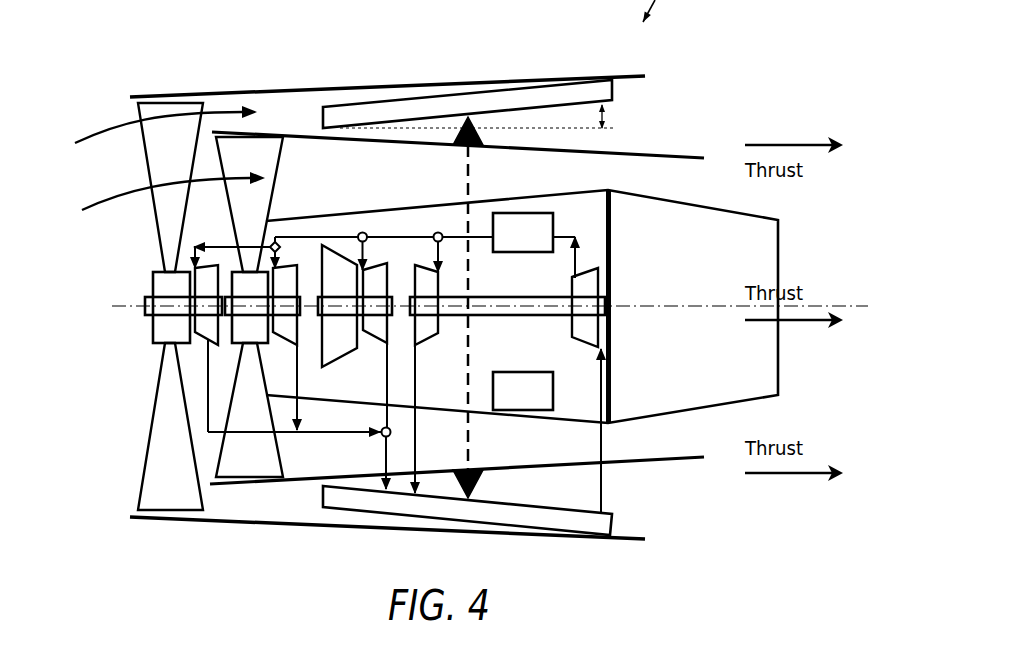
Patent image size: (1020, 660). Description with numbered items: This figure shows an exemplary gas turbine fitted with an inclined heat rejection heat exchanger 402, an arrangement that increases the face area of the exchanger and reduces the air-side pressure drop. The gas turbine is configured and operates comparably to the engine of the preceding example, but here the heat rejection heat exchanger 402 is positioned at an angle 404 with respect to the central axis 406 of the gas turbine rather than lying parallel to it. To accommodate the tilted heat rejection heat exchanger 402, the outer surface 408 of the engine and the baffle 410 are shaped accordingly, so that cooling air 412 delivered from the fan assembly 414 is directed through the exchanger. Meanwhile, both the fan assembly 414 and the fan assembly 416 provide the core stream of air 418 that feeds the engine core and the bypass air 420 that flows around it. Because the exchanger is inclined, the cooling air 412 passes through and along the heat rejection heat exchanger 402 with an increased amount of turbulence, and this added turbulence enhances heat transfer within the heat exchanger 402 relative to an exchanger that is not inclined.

The heat rejection heat exchanger 402 is at (405, 98).
The angle 404 is at (613, 117).
The central axis 406 is at (852, 307).
The outer surface 408 is at (290, 92).
The baffle 410 is at (508, 143).
The cooling air 412 is at (144, 139).
The fan assembly 414 is at (178, 102).
The fan assembly 416 is at (271, 497).
The core stream of air 418 is at (174, 330).
The bypass air 420 is at (160, 307).